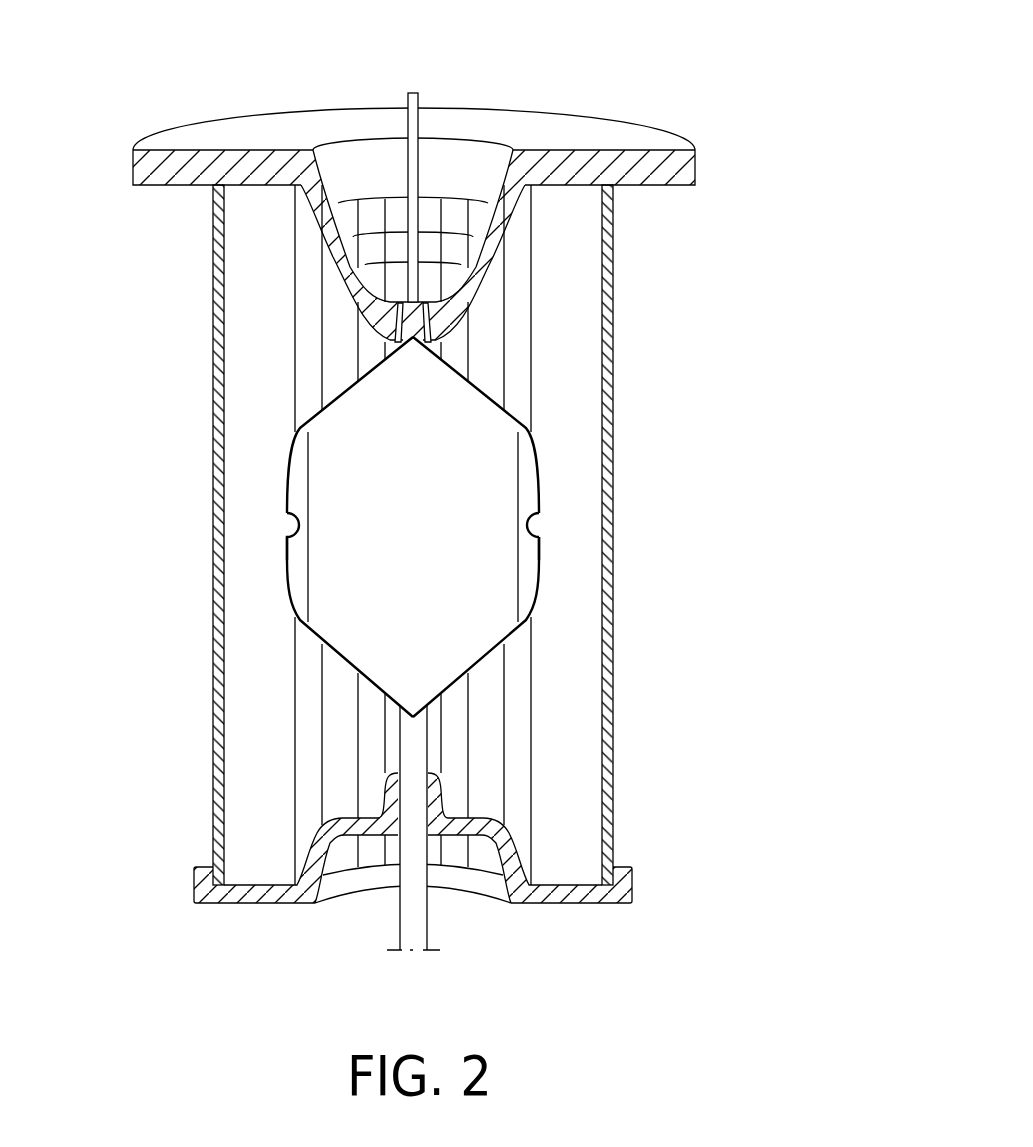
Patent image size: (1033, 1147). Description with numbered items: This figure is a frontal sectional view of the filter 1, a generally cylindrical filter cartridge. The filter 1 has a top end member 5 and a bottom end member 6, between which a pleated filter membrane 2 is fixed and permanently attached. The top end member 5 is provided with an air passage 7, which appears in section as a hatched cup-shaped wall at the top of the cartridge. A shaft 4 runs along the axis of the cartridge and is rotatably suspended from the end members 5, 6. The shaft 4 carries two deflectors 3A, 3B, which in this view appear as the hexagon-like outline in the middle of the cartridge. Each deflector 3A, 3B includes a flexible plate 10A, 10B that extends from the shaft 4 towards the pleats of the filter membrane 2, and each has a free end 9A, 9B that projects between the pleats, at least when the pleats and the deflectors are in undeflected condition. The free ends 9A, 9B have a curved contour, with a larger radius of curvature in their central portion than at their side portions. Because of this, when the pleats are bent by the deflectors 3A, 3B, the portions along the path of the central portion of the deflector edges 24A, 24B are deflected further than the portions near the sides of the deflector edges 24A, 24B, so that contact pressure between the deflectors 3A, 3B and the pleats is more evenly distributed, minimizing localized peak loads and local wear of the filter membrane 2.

The filter 1 is at (431, 475).
The pleated filter membrane 2 is at (609, 773).
The deflector 3A is at (343, 587).
The deflector 3B is at (483, 587).
The shaft 4 is at (428, 733).
The top end member 5 is at (685, 168).
The bottom end member 6 is at (627, 883).
The air passage 7 is at (461, 166).
The free end 9A is at (297, 551).
The free end 9B is at (529, 551).
The flexible plate 10A is at (338, 456).
The flexible plate 10B is at (490, 456).
The deflector edge 24A is at (287, 490).
The deflector edge 24B is at (539, 490).